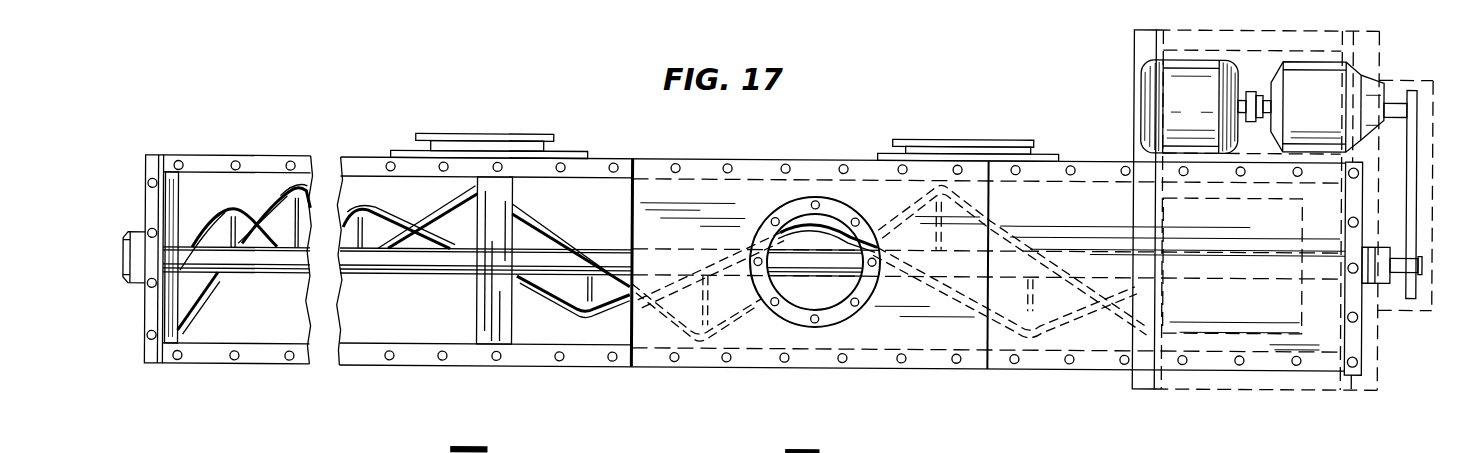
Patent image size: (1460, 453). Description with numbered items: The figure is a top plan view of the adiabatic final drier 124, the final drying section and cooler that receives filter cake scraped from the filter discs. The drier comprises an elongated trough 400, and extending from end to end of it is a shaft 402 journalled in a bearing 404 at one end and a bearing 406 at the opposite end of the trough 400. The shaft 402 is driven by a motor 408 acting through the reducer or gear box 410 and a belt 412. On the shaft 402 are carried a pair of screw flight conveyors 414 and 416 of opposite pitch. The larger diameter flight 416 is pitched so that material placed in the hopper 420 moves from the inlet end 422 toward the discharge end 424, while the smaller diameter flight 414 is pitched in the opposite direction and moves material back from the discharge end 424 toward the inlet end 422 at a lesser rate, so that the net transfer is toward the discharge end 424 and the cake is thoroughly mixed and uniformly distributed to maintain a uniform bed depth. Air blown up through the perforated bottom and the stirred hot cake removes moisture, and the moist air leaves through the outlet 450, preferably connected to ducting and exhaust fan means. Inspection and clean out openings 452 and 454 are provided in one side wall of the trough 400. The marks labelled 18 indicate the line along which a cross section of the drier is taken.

The trough 400 is at (363, 367).
The shaft 402 is at (393, 266).
The bearing 404 is at (140, 231).
The bearing 406 is at (1340, 294).
The motor 408 is at (1166, 99).
The reducer or gear box 410 is at (1335, 99).
The belt 412 is at (1415, 284).
The screw flight conveyor 414 is at (228, 216).
The screw flight conveyor 416 is at (285, 191).
The hopper 420 is at (273, 331).
The inlet end 422 is at (142, 348).
The discharge end 424 is at (1372, 387).
The outlet 450 is at (802, 195).
The inspection and clean out opening 452 is at (493, 133).
The inspection and clean out opening 454 is at (930, 136).
The adiabatic final drier 124 is at (927, 372).
The section line 18- 18 is at (630, 114).